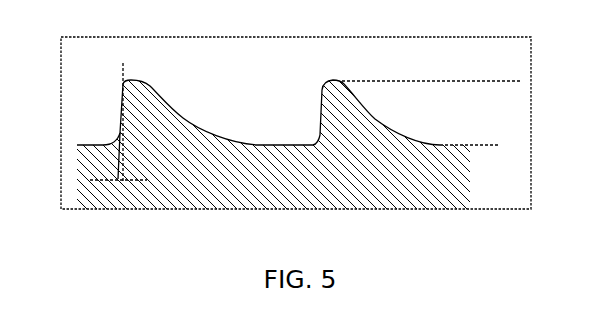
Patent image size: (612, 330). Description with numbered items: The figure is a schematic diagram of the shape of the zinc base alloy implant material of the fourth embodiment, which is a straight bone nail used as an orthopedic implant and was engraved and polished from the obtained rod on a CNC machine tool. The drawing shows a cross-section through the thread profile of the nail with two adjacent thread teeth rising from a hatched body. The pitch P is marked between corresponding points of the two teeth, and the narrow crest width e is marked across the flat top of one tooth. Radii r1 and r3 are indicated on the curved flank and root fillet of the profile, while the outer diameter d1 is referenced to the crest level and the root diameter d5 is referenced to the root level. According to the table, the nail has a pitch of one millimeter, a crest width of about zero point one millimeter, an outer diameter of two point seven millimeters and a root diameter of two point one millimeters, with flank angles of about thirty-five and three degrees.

The thread pitch P is at (123, 63).
The crest width e is at (377, 63).
The flank radius r1 is at (209, 131).
The root fillet radius r3 is at (313, 139).
The root diameter d5 is at (499, 145).
The outer diameter d1 is at (518, 81).